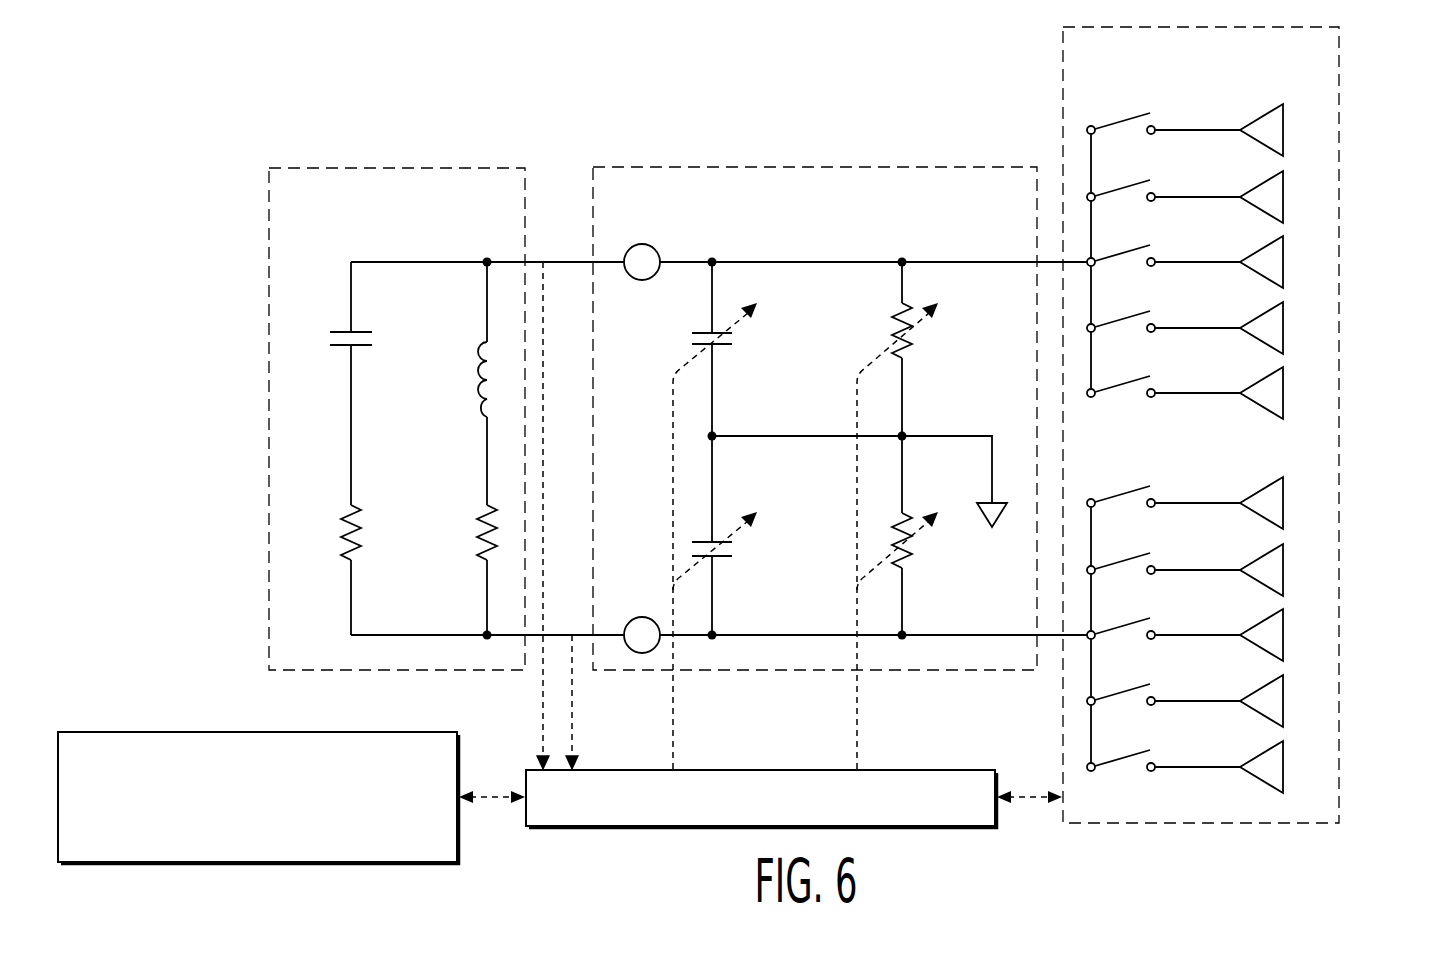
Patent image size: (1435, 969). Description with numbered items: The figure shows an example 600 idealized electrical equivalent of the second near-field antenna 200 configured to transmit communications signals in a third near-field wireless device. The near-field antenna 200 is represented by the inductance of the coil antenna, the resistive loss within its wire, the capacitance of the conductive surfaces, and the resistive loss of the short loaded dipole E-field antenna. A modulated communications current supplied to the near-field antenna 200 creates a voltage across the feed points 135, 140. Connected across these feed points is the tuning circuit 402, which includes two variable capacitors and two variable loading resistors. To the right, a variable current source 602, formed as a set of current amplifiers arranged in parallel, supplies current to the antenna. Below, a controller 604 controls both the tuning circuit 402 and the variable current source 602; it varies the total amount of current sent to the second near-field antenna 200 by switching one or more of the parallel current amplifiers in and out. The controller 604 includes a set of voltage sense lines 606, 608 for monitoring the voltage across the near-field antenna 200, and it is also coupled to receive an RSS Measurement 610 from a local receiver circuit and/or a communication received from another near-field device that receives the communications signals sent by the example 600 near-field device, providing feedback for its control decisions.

The example 600 is at (176, 128).
The second near-field antenna 200 is at (487, 167).
The tuning circuit 402 is at (942, 167).
The variable current source 602 is at (1341, 213).
The feed point 135 is at (642, 281).
The feed point 140 is at (642, 616).
The voltage sense line 606 is at (542, 709).
The voltage sense line 608 is at (573, 718).
The controller 604 is at (944, 769).
The RSS Measurement 610 is at (117, 731).